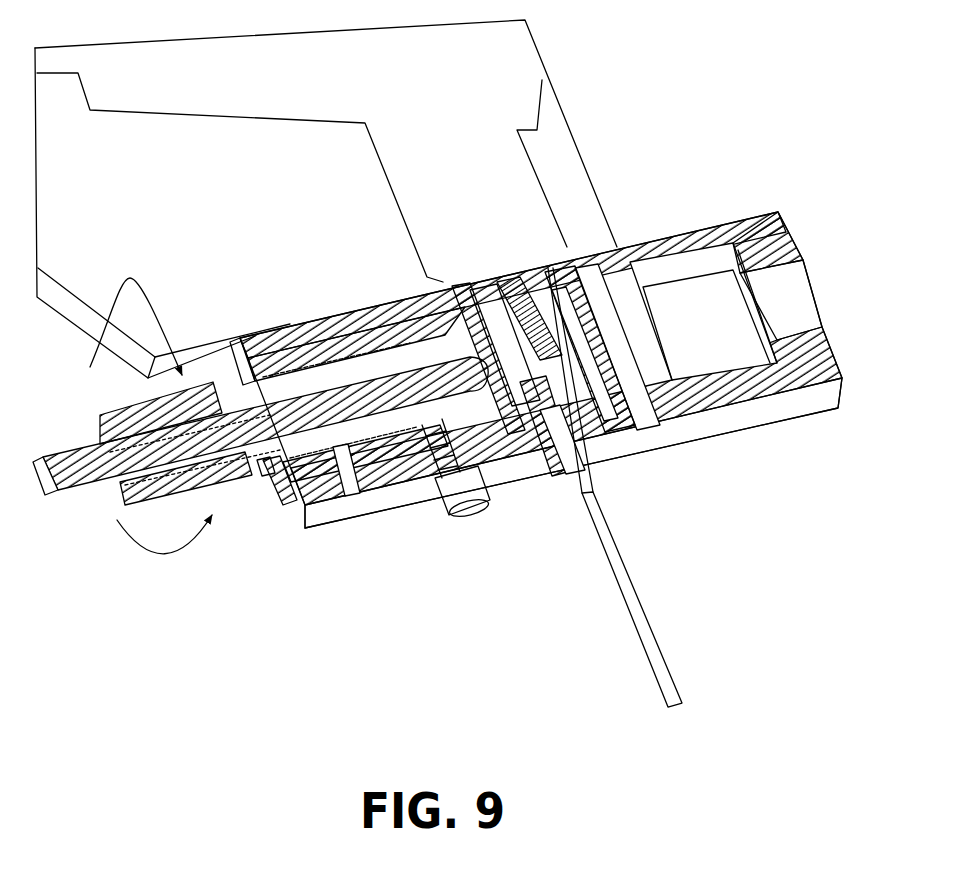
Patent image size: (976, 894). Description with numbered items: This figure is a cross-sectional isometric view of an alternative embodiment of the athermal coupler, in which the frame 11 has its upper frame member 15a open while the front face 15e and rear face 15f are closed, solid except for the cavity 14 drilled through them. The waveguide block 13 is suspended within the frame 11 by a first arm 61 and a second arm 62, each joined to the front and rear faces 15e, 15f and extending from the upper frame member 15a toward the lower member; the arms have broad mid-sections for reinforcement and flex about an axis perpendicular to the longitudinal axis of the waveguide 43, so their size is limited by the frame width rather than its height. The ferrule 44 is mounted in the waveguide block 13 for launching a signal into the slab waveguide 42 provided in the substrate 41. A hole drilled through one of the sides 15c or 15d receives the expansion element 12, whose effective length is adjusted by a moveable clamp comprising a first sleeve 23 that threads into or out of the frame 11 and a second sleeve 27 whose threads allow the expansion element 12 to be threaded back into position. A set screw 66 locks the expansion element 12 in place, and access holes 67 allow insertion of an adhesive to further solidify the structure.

The frame 11 is at (562, 370).
The expansion element 12 is at (85, 470).
The waveguide block 13 is at (632, 402).
The cavity 14 is at (563, 435).
The upper frame member 15a is at (773, 235).
The side 15c is at (283, 500).
The side 15d is at (827, 348).
The front face 15e is at (742, 418).
The rear face 15f is at (686, 225).
The first sleeve 23 is at (268, 463).
The second sleeve 27 is at (118, 417).
The substrate 41 is at (241, 205).
The slab waveguide 42 is at (446, 99).
The waveguide 43 is at (645, 635).
The ferrule 44 is at (510, 277).
The first arm 61 is at (502, 440).
The second arm 62 is at (548, 268).
The set screw 66 is at (460, 515).
The access holes 67 is at (360, 480).